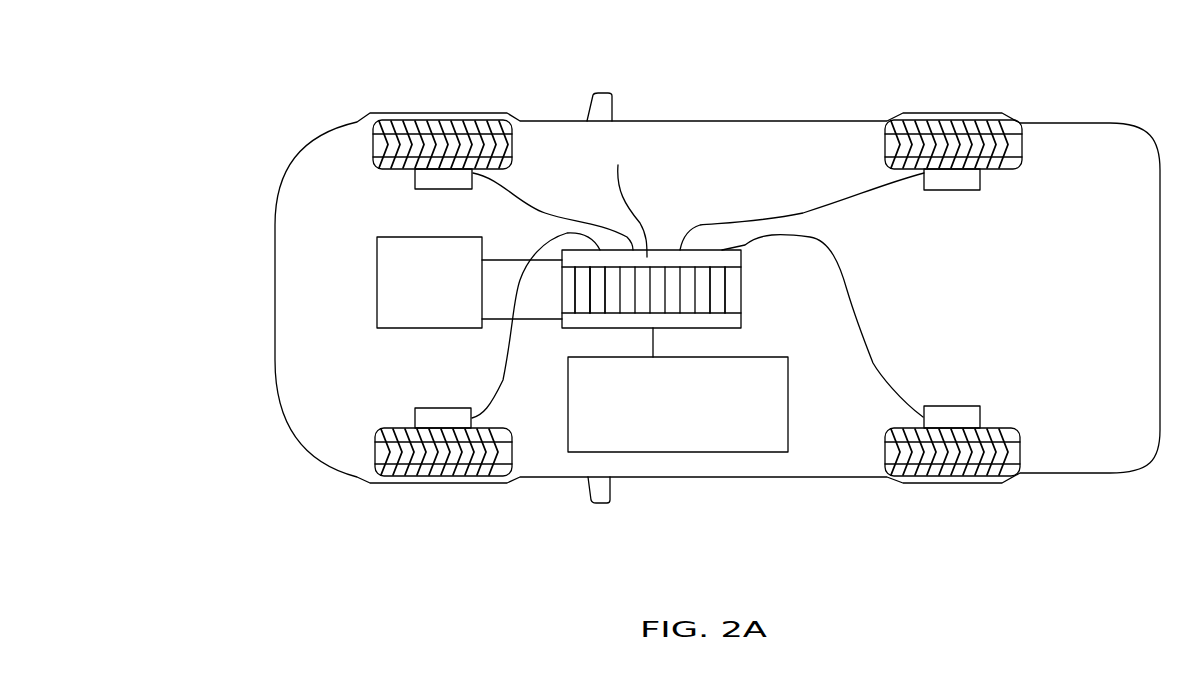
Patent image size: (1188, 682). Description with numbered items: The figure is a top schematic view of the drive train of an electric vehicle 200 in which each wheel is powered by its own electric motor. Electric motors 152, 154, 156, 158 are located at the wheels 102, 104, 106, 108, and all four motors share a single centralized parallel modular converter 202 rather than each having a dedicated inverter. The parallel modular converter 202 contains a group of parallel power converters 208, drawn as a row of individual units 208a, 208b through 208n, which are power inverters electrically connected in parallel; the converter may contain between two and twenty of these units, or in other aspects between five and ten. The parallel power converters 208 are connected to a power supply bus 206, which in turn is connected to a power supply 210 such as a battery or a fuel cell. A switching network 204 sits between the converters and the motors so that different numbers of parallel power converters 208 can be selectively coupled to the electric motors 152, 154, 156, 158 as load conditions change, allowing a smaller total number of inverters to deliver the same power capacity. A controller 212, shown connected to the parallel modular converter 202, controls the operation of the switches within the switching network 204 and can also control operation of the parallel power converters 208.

The electric vehicle 200 is at (262, 72).
The wheel 102 is at (452, 117).
The wheel 104 is at (437, 468).
The wheel 106 is at (948, 117).
The wheel 108 is at (962, 468).
The electric motor 152 is at (433, 182).
The electric motor 154 is at (438, 417).
The electric motor 156 is at (955, 183).
The electric motor 158 is at (960, 412).
The parallel modular converter 202 is at (711, 266).
The switching network 204 is at (623, 196).
The power supply bus 206 is at (700, 323).
The parallel power converters 208 is at (711, 316).
The parallel power converter 208a is at (568, 298).
The parallel power converter 208b is at (583, 303).
The parallel power converter 208n is at (740, 295).
The power supply 210 is at (728, 440).
The controller 212 is at (398, 287).